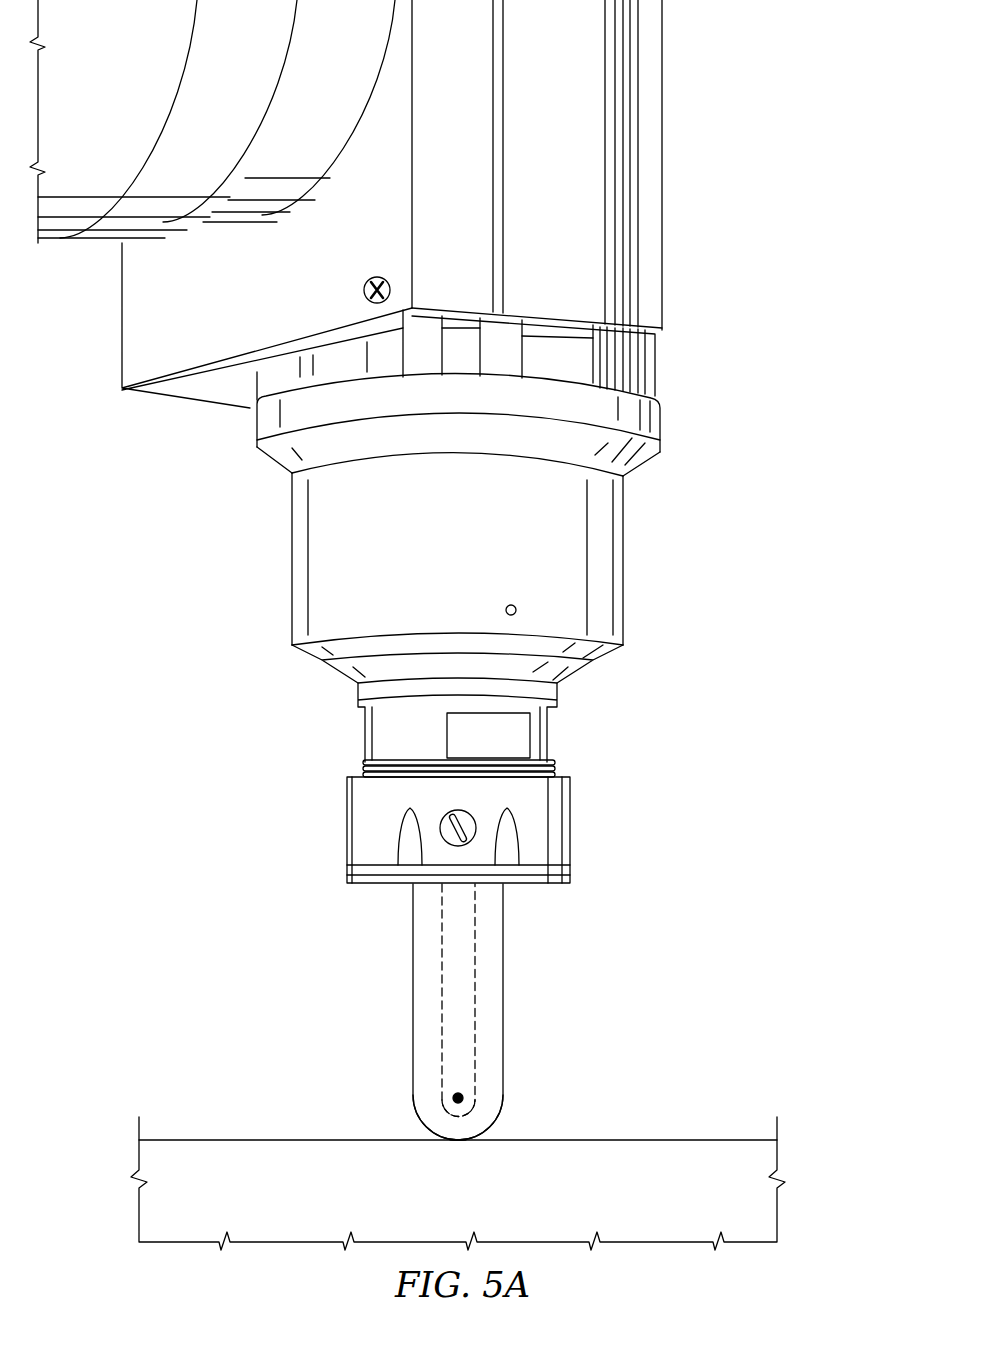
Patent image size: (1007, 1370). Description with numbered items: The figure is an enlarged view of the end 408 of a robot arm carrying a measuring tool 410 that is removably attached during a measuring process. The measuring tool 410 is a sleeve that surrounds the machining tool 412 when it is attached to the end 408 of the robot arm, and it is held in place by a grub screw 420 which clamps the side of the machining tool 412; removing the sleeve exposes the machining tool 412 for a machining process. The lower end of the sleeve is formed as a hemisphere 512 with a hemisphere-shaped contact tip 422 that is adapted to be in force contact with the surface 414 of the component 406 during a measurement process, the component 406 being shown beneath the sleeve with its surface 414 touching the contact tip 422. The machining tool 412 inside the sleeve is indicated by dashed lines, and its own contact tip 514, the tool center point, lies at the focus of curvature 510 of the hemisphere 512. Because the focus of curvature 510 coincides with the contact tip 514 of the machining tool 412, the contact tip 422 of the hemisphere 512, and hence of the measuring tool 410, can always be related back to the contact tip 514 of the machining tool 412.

The component 406 is at (367, 1204).
The end of robot arm 408 is at (719, 233).
The measuring tool 410 is at (503, 950).
The machining tool 412 is at (440, 925).
The surface 414 is at (274, 1140).
The grub screw 420 is at (440, 827).
The contact tip 422 is at (457, 1143).
The focus of curvature 510 is at (456, 1098).
The hemisphere 512 is at (467, 1122).
The contact tip of the machining tool 514 is at (478, 1086).